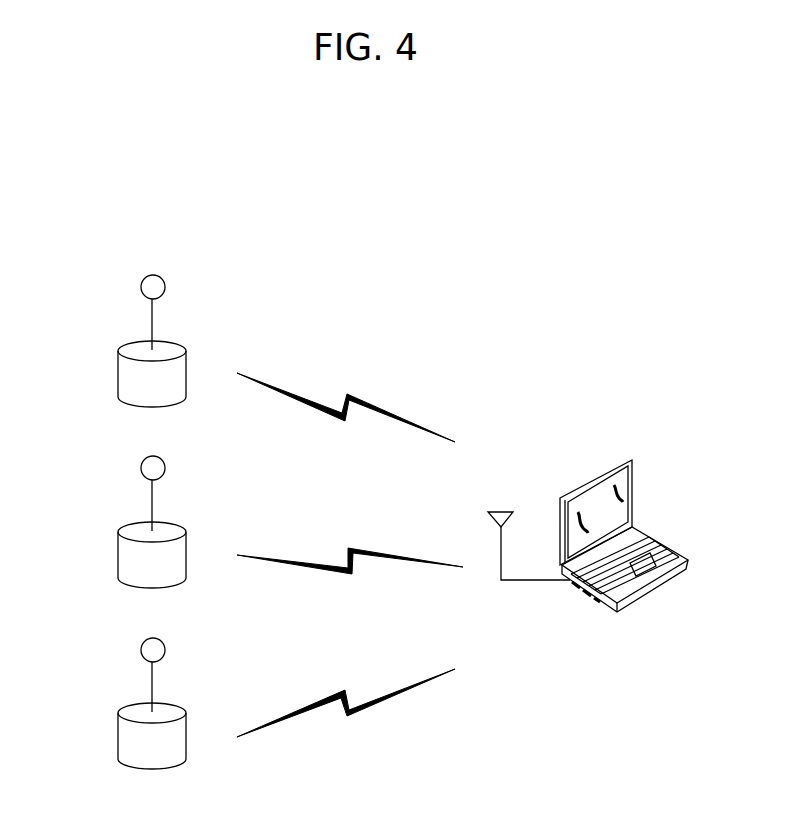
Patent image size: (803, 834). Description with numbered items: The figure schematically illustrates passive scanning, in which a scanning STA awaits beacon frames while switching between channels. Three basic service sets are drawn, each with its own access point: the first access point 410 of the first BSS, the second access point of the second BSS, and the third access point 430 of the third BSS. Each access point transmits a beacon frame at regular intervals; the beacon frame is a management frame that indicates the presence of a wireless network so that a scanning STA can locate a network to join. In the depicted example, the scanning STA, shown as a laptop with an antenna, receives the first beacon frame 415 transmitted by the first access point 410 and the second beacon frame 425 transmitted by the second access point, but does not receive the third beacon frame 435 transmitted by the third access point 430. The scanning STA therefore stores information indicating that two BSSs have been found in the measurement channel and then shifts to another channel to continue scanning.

The AP1 410 is at (128, 343).
The AP3 430 is at (128, 705).
The beacon frame 1 415 is at (367, 332).
The beacon frame 2 425 is at (365, 512).
The beacon frame 3 435 is at (367, 748).